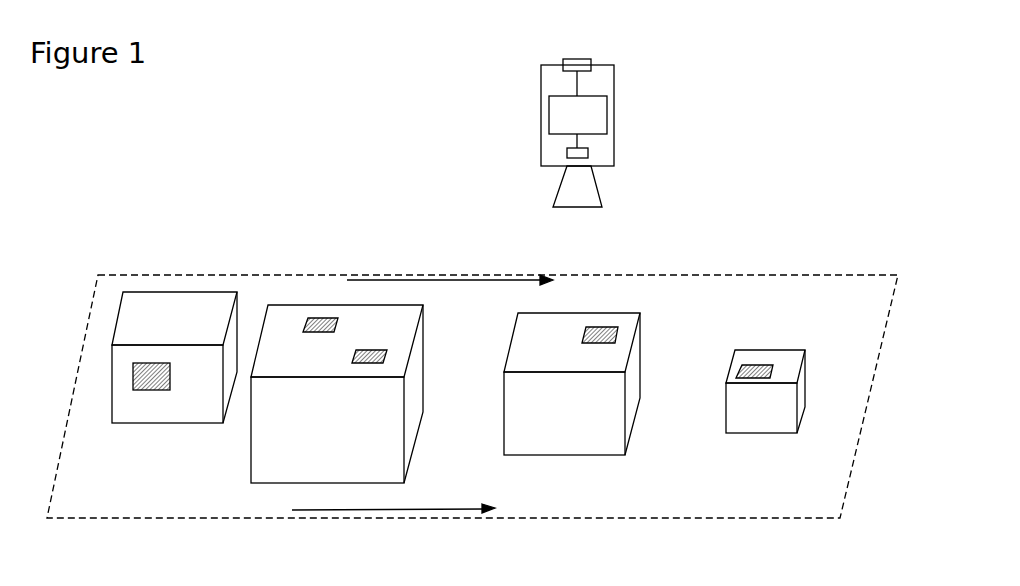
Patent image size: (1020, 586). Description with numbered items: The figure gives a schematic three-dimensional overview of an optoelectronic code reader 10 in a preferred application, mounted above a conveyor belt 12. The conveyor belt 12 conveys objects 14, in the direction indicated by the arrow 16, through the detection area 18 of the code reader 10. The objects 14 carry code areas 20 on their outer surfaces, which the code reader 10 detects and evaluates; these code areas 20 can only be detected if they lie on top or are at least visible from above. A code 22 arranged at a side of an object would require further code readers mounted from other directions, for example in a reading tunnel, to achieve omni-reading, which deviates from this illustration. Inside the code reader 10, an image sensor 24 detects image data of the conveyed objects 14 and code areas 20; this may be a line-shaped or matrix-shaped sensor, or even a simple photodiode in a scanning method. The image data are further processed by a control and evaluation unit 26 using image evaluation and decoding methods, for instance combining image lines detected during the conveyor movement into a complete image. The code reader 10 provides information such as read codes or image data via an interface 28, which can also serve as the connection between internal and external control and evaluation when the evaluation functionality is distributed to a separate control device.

The optoelectronic code reader 10 is at (576, 109).
The conveyor belt 12 is at (808, 520).
The objects 14 is at (195, 400).
The arrow 16 is at (377, 510).
The detection area 18 is at (612, 265).
The code areas 20 is at (365, 352).
The code 22 is at (143, 378).
The image sensor 24 is at (568, 157).
The control and evaluation unit 26 is at (602, 135).
The interface 28 is at (570, 63).